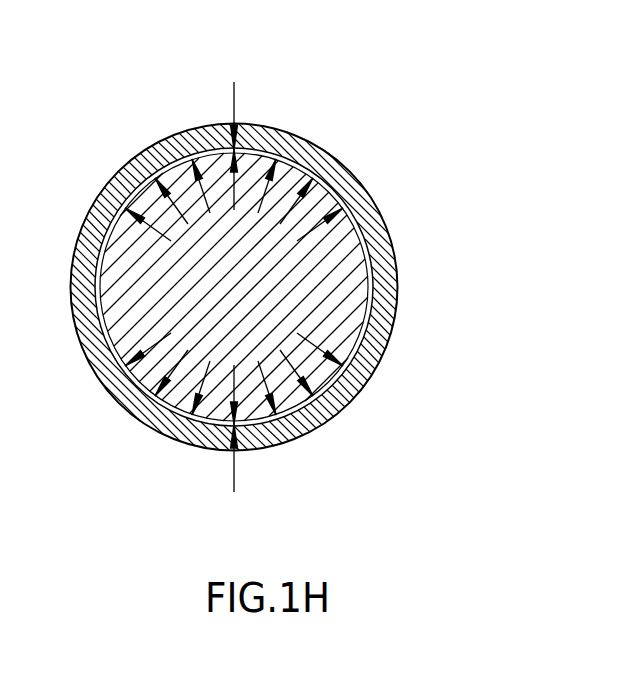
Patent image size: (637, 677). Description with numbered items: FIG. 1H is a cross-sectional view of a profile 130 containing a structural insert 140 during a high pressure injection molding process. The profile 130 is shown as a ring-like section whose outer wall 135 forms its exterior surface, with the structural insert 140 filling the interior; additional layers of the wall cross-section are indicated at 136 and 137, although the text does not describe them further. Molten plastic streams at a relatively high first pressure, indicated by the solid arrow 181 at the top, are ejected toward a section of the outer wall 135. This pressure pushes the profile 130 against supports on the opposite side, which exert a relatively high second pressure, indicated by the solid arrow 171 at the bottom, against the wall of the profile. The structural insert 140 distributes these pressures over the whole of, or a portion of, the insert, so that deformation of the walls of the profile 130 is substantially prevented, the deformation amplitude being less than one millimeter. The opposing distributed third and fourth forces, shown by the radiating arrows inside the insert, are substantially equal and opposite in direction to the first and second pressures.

The profile 130 is at (299, 264).
The outer wall 135 is at (393, 241).
The inner liner 136 is at (349, 203).
The sheath layer 137 is at (390, 323).
The structural insert 140 is at (357, 268).
The solid arrow 181 is at (235, 102).
The solid arrow 171 is at (235, 472).